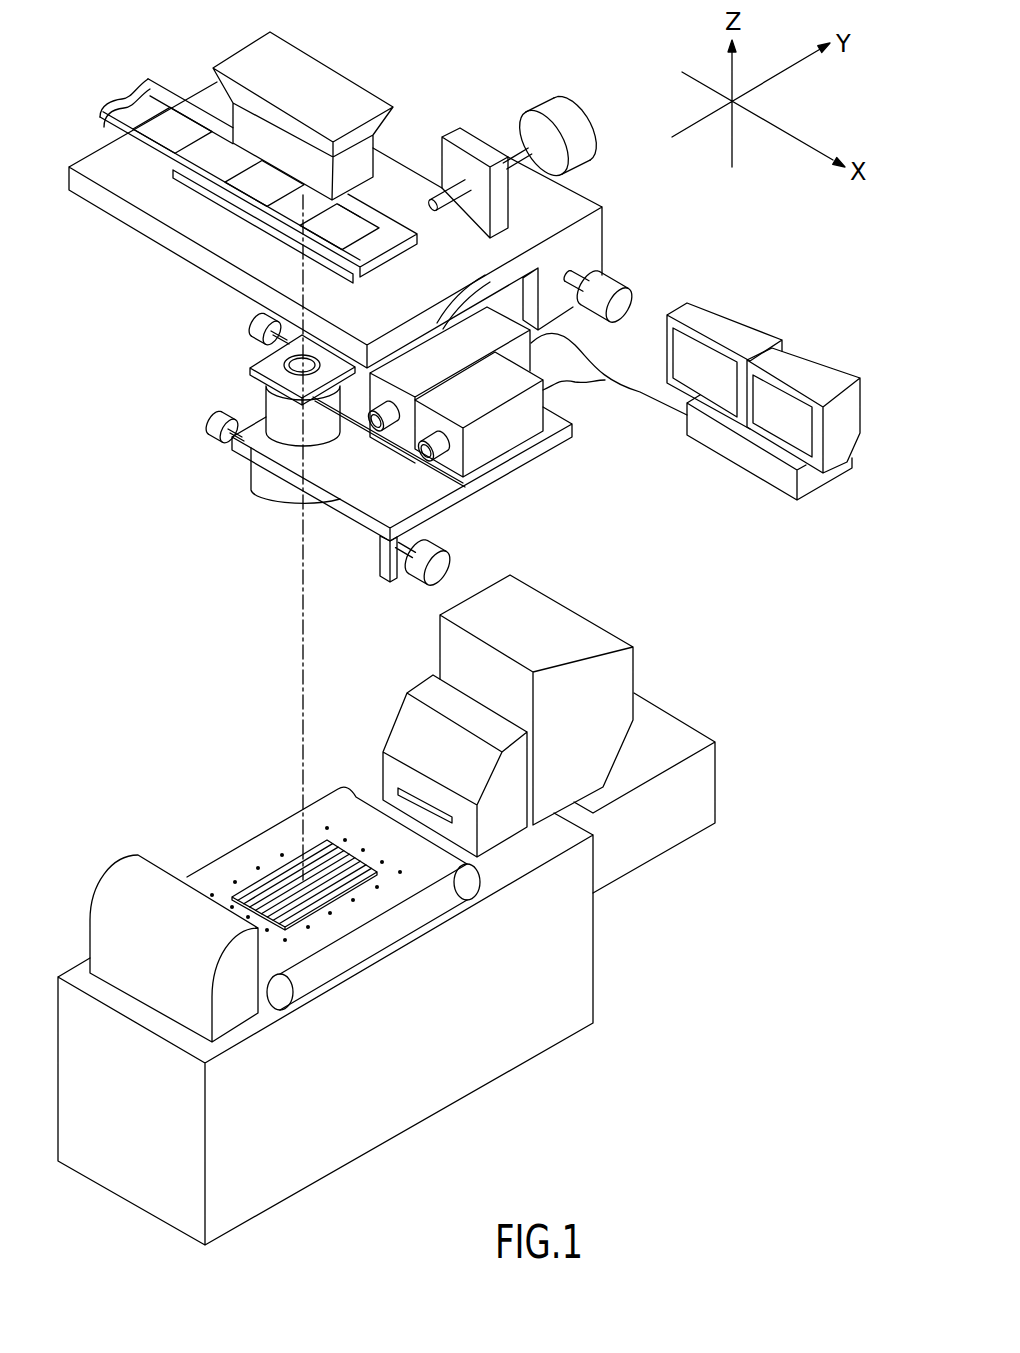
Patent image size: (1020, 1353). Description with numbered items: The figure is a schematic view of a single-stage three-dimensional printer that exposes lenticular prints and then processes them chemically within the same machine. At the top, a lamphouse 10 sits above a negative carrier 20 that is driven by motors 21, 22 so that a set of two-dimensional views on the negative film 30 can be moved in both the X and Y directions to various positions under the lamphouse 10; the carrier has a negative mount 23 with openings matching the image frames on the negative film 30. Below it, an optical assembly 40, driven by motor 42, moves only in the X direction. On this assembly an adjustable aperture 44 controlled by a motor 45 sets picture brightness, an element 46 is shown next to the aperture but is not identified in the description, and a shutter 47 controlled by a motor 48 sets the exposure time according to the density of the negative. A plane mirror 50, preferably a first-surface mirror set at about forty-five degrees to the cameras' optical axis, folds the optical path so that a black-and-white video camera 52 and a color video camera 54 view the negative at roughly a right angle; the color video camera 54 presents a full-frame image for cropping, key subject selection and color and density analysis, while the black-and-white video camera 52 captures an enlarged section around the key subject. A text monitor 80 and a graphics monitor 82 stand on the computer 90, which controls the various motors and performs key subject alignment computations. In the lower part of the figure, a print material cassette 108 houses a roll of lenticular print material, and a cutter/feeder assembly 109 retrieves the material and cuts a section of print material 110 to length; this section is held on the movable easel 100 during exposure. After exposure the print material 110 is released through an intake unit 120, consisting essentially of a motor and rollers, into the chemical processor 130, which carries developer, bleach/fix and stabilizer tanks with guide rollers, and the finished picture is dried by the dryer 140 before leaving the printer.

The lamphouse 10 is at (330, 80).
The negative carrier 20 is at (580, 202).
The motor 21 is at (610, 277).
The motor 22 is at (562, 105).
The negative mount 23 is at (207, 178).
The negative film 30 is at (163, 85).
The optical assembly 40 is at (355, 498).
The motor 42 is at (420, 573).
The adjustable aperture 44 is at (290, 360).
The motor 45 is at (260, 317).
The nozzle body 46 is at (273, 412).
The shutter 47 is at (257, 477).
The motor 48 is at (207, 427).
The plane mirror 50 is at (440, 477).
The black-and-white video camera 52 is at (525, 433).
The color video camera 54 is at (520, 357).
The text monitor 80 is at (705, 317).
The graphics monitor 82 is at (790, 367).
The computer 90 is at (760, 470).
The movable easel 100 is at (258, 843).
The print material cassette 108 is at (560, 610).
The cutter/feeder assembly 109 is at (428, 687).
The lenticular print material section 110 is at (343, 883).
The intake unit 120 is at (133, 880).
The chemical processor 130 is at (583, 982).
The dryer 140 is at (700, 785).